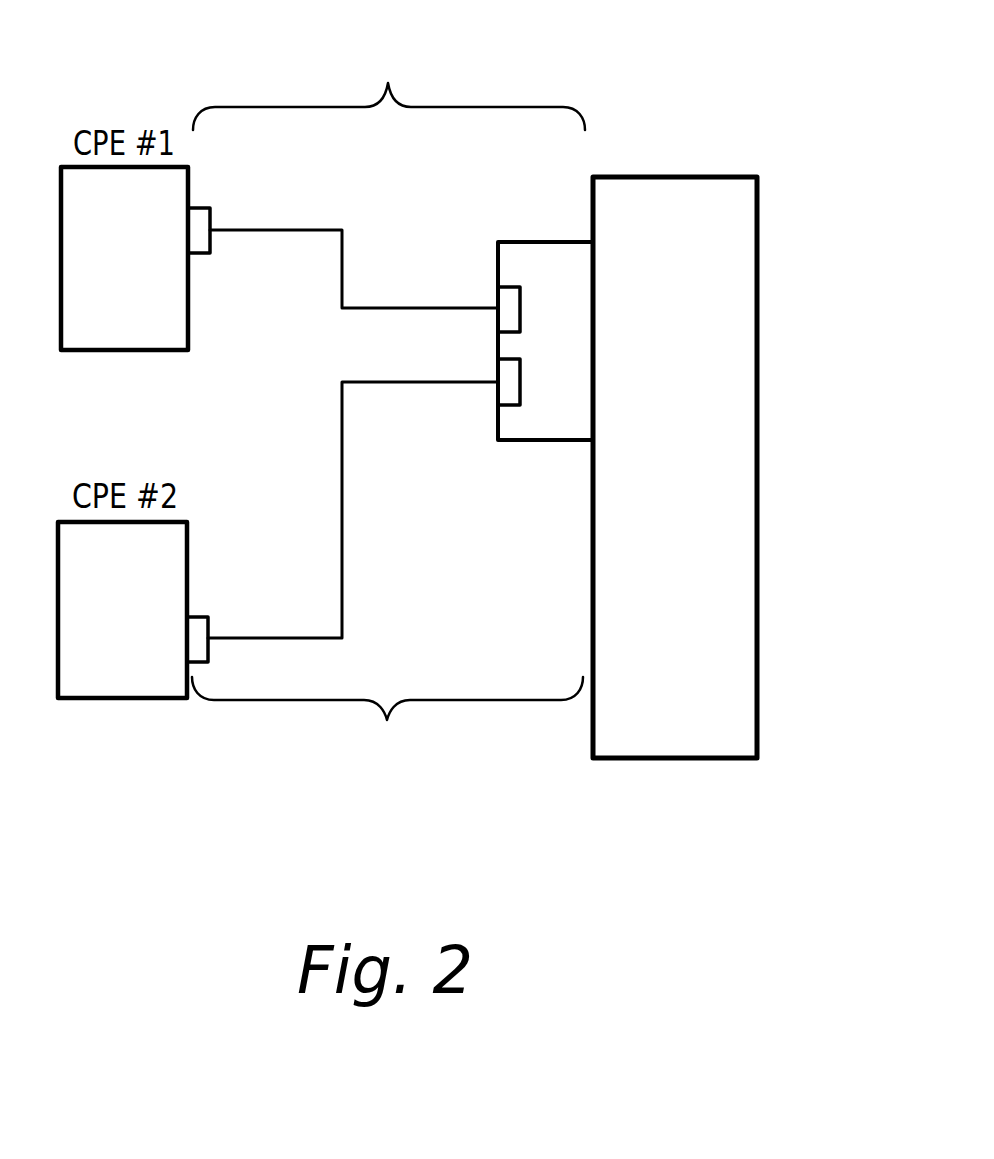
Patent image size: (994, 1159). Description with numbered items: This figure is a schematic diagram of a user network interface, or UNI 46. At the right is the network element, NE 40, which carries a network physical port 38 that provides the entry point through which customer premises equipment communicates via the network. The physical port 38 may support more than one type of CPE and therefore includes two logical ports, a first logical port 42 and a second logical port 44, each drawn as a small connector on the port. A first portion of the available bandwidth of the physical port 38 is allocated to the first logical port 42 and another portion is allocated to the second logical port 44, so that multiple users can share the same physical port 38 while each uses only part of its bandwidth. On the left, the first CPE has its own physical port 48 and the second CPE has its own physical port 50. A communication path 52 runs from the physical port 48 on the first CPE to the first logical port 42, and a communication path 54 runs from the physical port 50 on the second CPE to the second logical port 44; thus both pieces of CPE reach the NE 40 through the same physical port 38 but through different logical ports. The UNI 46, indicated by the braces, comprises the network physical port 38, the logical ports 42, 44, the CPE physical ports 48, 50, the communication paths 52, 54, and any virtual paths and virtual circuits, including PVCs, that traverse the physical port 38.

The physical port 38 is at (545, 241).
The NE 40 is at (757, 440).
The first logical port 42 is at (498, 297).
The second logical port 44 is at (502, 395).
The UNI 46 is at (388, 404).
The physical port on CPE #1 48 is at (205, 243).
The physical port on CPE #2 50 is at (195, 617).
The communication path 52 is at (305, 231).
The communication path 54 is at (344, 516).